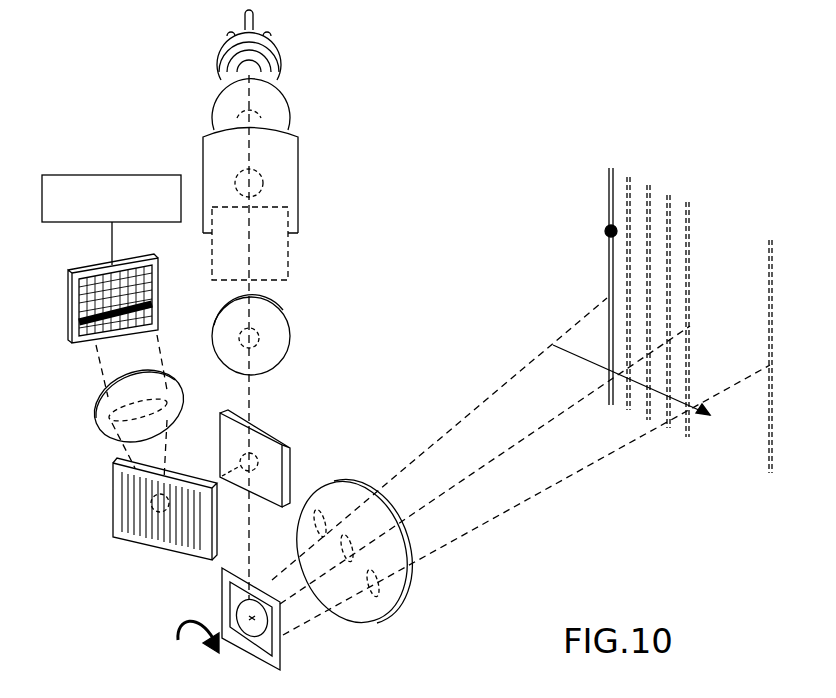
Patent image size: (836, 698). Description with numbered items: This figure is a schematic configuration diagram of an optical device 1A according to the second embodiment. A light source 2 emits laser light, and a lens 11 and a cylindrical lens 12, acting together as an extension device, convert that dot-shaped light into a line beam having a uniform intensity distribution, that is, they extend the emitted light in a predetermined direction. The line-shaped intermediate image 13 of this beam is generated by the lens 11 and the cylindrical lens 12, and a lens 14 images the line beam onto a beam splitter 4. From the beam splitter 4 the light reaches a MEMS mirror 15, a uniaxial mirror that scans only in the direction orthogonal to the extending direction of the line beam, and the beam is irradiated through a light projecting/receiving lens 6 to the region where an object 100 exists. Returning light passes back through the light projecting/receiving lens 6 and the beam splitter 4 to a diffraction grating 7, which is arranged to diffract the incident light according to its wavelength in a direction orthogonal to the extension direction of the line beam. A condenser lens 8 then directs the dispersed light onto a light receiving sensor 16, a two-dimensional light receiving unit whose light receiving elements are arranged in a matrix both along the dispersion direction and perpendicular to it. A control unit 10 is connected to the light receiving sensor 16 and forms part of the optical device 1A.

The optical device 1A is at (434, 88).
The light source 2 is at (284, 65).
The beam splitter 4 is at (276, 438).
The light projecting/receiving lens 6 is at (406, 589).
The diffraction grating 7 is at (112, 500).
The condenser lens 8 is at (92, 419).
The control unit 10 is at (74, 175).
The lens 11 is at (291, 110).
The cylindrical lens 12 is at (299, 174).
The intermediate image 13 is at (289, 251).
The lens 14 is at (291, 330).
The MEMS mirror 15 is at (283, 642).
The light receiving sensor 16 is at (71, 308).
The object 100 is at (652, 164).